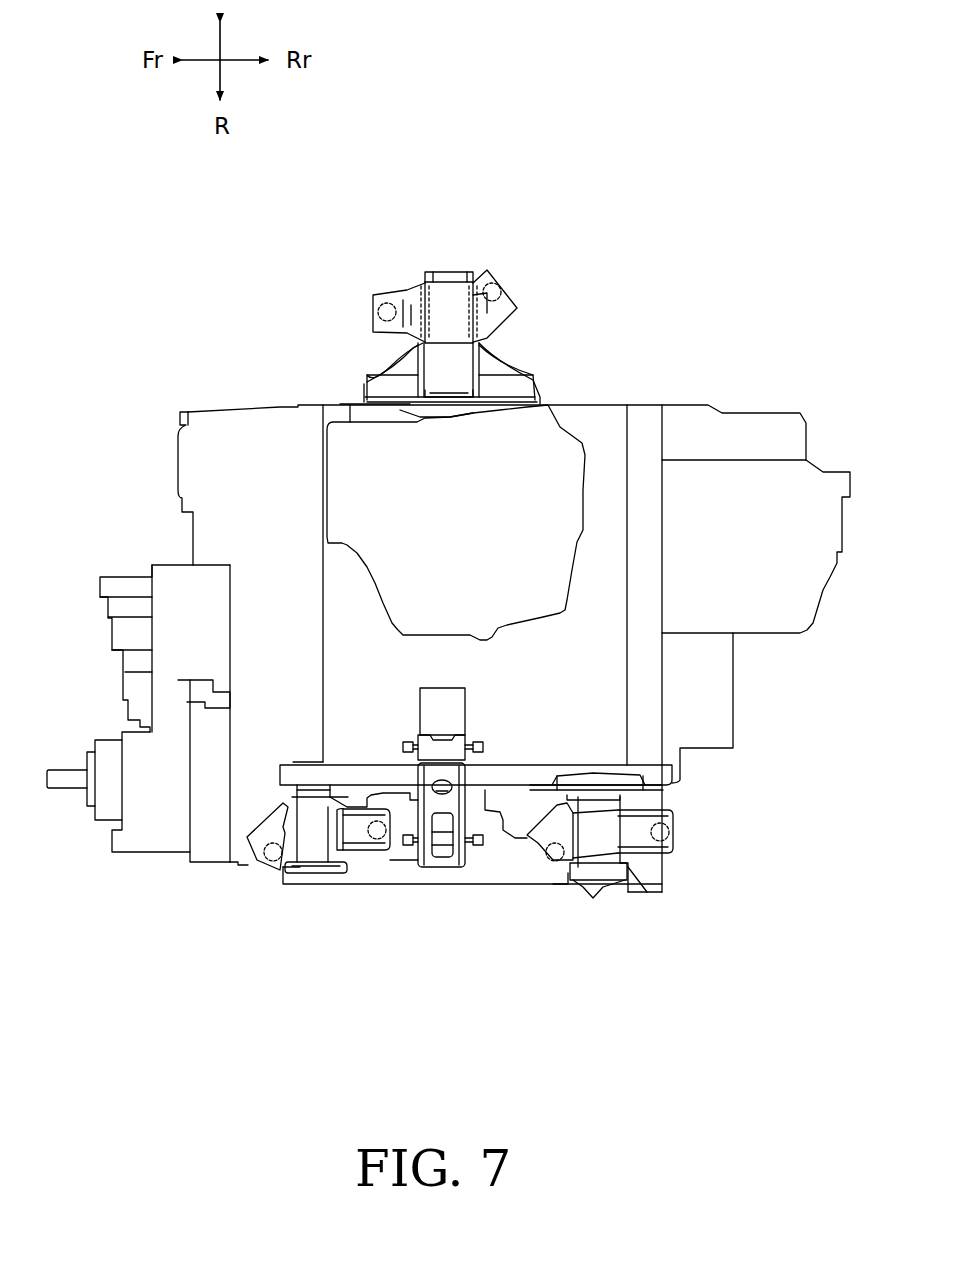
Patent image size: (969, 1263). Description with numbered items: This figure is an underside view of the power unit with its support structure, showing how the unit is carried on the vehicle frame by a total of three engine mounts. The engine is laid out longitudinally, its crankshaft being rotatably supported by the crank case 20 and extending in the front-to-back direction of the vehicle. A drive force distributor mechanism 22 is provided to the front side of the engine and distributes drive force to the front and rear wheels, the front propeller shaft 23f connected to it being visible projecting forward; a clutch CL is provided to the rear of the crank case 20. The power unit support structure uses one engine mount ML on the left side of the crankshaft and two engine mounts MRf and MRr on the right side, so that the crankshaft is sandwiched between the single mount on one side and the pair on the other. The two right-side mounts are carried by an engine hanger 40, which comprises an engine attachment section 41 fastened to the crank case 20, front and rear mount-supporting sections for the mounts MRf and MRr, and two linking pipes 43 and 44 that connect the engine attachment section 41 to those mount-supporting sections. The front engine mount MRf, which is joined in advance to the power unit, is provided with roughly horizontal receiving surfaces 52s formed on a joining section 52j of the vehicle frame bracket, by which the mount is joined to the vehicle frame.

The crank case 20 is at (598, 420).
The drive force distributor mechanism 22 is at (147, 800).
The front propeller shaft 23f is at (62, 793).
The engine hanger 40 is at (440, 900).
The engine attachment section 41 is at (423, 802).
The linking pipe 43 is at (498, 878).
The linking pipe 44 is at (520, 772).
The receiving surfaces 52s is at (262, 837).
The joining section 52j is at (327, 843).
The engine mount ML is at (450, 243).
The front engine mount MRf is at (320, 903).
The rear engine mount MRr is at (597, 912).
The clutch CL is at (745, 487).